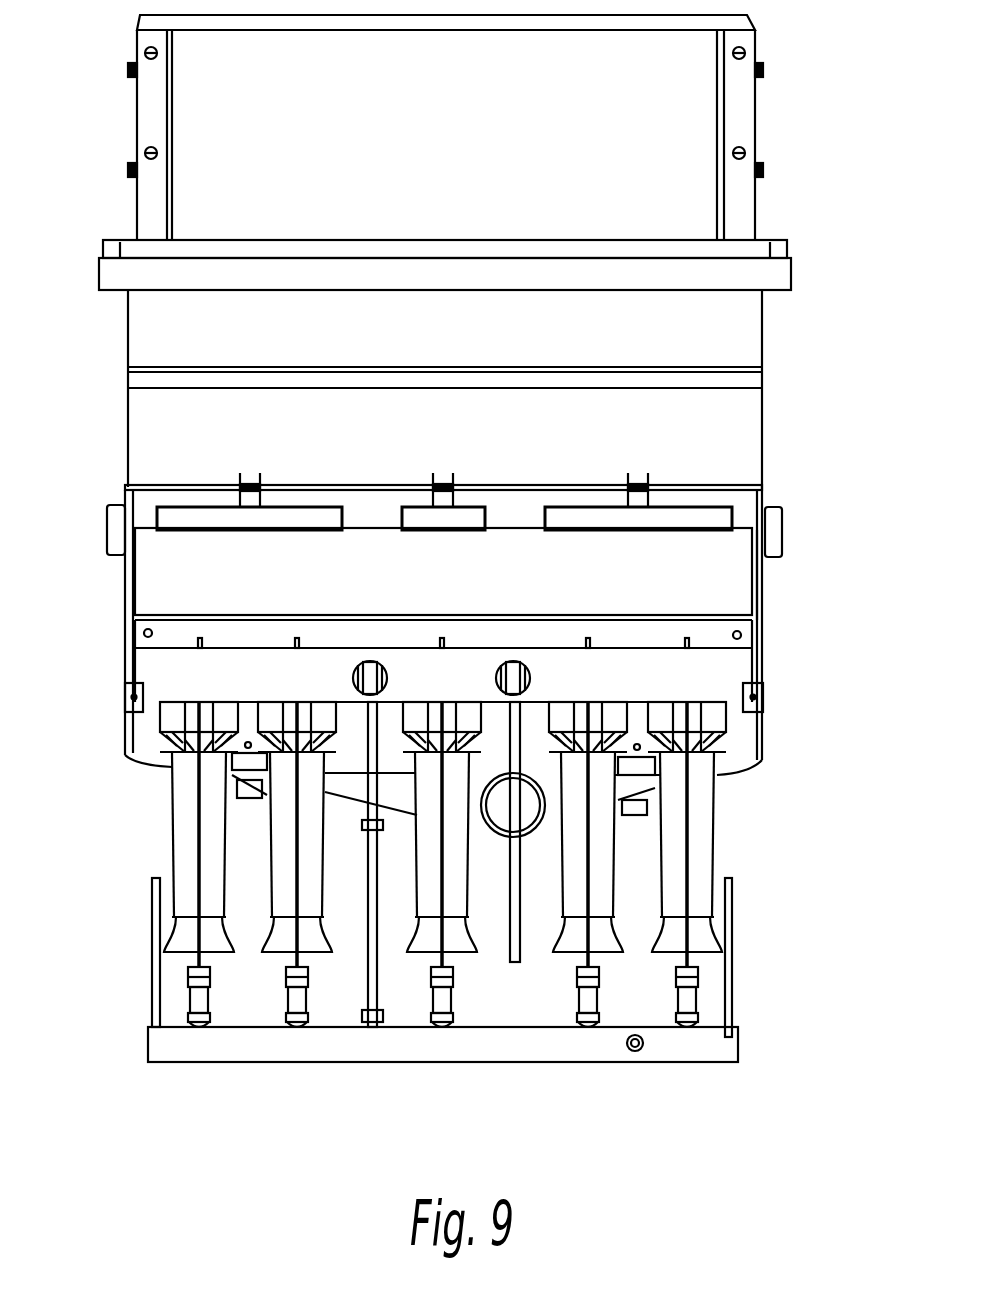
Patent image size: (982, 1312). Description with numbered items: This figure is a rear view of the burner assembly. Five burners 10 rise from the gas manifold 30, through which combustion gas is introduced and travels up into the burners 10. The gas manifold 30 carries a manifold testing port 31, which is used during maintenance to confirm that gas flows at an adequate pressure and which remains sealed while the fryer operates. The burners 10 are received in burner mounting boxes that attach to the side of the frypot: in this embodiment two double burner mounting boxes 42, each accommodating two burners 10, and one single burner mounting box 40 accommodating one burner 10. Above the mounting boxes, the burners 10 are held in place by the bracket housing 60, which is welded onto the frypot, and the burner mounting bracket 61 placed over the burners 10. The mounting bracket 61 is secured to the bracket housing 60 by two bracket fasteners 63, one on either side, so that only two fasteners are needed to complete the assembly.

The burner 10 is at (703, 840).
The gas manifold 30 is at (258, 1062).
The manifold testing port 31 is at (635, 1051).
The single burner mounting box 40 is at (408, 507).
The double burner mounting box 42 is at (220, 507).
The bracket housing 60 is at (763, 573).
The burner mounting bracket 61 is at (172, 573).
The bracket fastener 63 is at (144, 633).